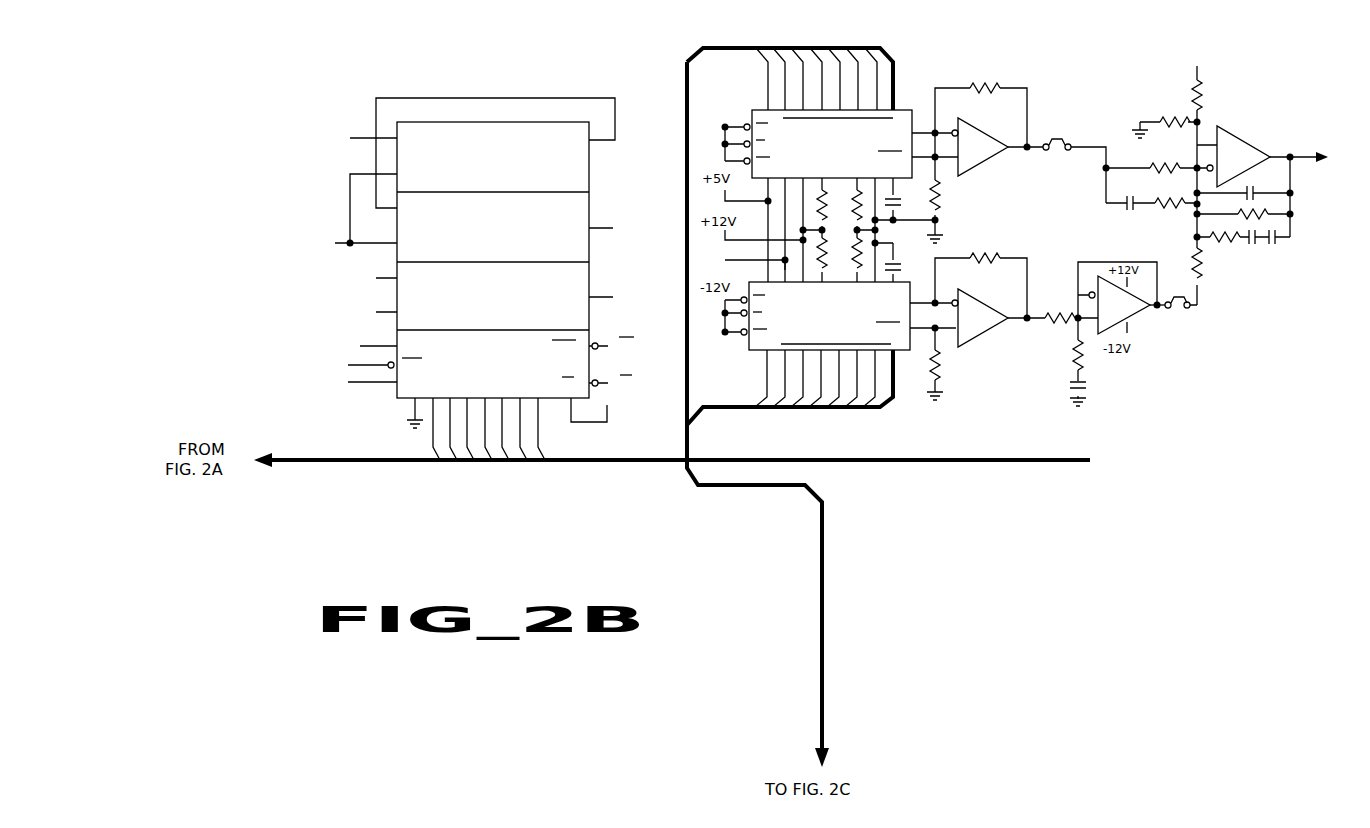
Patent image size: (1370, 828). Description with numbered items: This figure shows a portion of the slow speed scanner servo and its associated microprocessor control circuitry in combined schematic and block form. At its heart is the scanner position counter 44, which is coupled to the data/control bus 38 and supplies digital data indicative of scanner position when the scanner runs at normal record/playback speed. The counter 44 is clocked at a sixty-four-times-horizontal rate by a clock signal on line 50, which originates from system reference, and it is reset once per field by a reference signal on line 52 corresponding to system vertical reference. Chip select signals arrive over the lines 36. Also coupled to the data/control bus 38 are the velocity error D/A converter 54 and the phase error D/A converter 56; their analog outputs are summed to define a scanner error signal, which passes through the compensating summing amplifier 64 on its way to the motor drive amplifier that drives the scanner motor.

The chip select lines 36 is at (352, 382).
The data/control bus 38 is at (657, 480).
The scanner position counter 44 is at (603, 328).
The 64 H clock signal line 50 is at (348, 243).
The reference signal line 52 is at (361, 138).
The velocity error D/A converter 54 is at (906, 103).
The phase error D/A converter 56 is at (902, 356).
The compensating summing amplifier 64 is at (1221, 256).